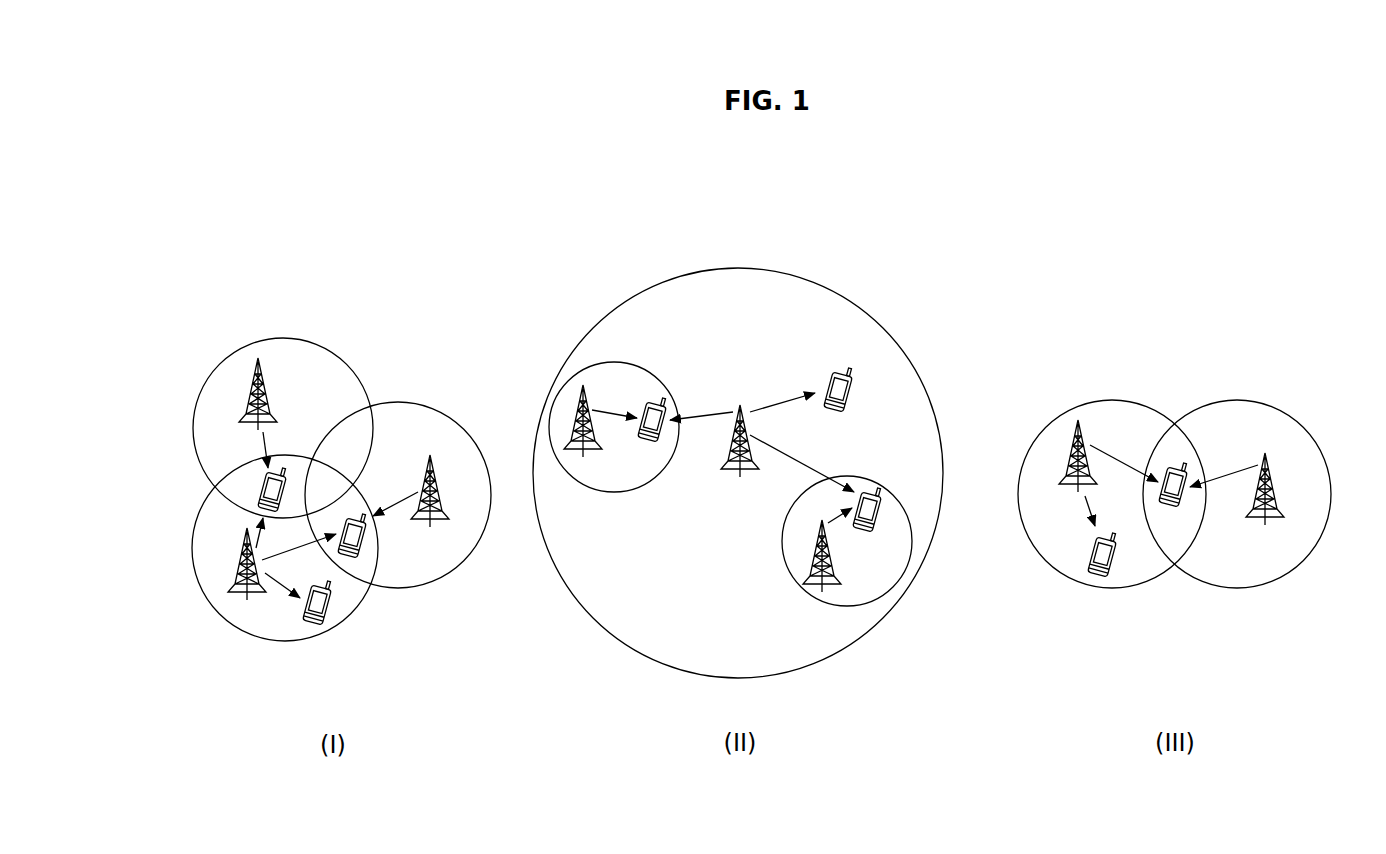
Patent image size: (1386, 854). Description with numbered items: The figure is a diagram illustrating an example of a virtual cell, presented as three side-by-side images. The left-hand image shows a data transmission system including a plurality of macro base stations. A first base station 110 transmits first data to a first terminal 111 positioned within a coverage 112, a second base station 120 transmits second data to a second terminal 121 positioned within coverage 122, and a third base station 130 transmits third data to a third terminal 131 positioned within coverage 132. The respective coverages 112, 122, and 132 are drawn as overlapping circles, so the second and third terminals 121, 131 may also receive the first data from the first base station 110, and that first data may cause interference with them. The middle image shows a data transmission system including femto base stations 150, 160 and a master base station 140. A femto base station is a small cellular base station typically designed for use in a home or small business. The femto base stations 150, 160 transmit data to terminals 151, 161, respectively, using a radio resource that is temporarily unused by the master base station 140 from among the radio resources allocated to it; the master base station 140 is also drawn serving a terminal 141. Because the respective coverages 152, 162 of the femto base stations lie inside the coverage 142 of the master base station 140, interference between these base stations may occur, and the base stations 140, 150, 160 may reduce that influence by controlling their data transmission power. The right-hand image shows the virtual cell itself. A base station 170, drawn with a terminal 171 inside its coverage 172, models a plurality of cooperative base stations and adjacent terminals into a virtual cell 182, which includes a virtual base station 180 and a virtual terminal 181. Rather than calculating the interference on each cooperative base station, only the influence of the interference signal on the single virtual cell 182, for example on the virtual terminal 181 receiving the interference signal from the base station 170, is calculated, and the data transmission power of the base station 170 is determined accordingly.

The first base station 110 is at (235, 566).
The first terminal 111 is at (310, 628).
The coverage 112 is at (205, 603).
The second base station 120 is at (437, 477).
The second terminal 121 is at (360, 558).
The coverage 122 is at (408, 402).
The third base station 130 is at (256, 384).
The third terminal 131 is at (258, 484).
The coverage 132 is at (298, 338).
The master base station 140 is at (738, 468).
The terminal 141 is at (855, 398).
The coverage 142 is at (735, 268).
The femto base station 150 is at (805, 557).
The terminal 151 is at (880, 520).
The coverage 152 is at (870, 480).
The femto base station 160 is at (590, 448).
The terminal 161 is at (656, 405).
The coverage 162 is at (603, 362).
The base station 170 is at (1078, 433).
The terminal 171 is at (1112, 565).
The coverage 172 is at (1123, 400).
The virtual base station 180 is at (1272, 518).
The virtual terminal 181 is at (1178, 470).
The virtual cell 182 is at (1247, 402).